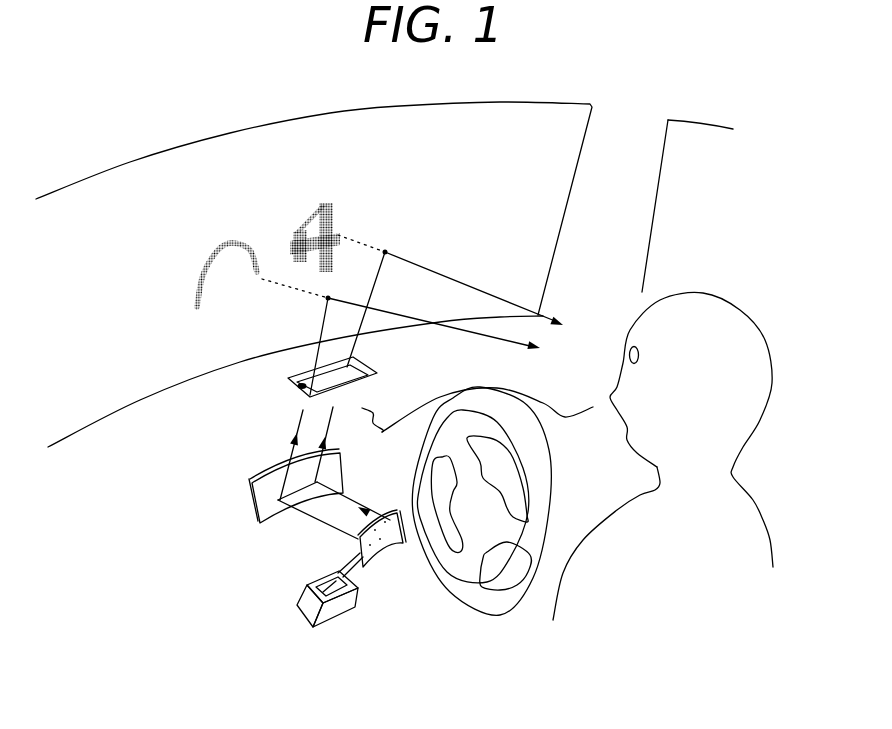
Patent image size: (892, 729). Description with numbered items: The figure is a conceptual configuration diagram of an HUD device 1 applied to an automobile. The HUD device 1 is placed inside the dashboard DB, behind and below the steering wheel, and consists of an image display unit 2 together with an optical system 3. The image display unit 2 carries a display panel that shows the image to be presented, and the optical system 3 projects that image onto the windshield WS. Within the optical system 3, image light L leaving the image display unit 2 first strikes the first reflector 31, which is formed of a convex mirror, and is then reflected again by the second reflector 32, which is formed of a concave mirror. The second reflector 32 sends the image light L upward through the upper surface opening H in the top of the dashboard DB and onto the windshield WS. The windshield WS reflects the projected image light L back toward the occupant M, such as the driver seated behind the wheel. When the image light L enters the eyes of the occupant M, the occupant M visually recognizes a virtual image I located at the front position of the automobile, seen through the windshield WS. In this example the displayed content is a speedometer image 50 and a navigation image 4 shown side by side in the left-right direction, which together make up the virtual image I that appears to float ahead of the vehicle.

The HUD device 1 is at (290, 543).
The image display unit 2 is at (343, 618).
The optical system 3 is at (290, 531).
The first reflector 31 is at (398, 547).
The second reflector 32 is at (250, 503).
The virtual image of indicator 4 is at (315, 237).
The virtual image of speed display 50 is at (227, 275).
The windshield WS is at (513, 118).
The dashboard DB is at (500, 389).
The upper surface opening H is at (300, 381).
The image light L is at (351, 361).
The virtual image I is at (291, 229).
The occupant M is at (706, 294).